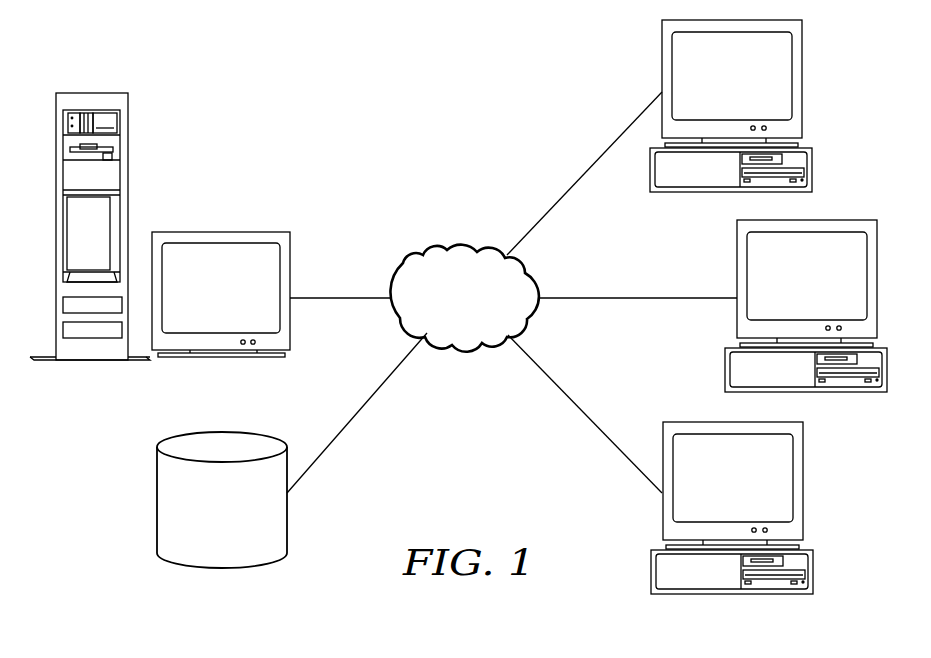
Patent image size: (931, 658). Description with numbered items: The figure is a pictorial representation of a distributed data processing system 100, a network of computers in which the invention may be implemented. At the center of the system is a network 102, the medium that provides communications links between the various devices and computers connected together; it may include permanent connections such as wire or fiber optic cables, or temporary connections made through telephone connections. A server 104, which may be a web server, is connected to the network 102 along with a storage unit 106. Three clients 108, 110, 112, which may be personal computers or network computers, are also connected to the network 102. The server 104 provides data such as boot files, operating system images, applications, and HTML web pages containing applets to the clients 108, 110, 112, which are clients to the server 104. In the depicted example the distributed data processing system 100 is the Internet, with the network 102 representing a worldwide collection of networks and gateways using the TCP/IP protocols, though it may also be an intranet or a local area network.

The distributed data processing system 100 is at (288, 89).
The network 102 is at (487, 308).
The server 104 is at (240, 298).
The storage unit 106 is at (240, 522).
The client 108 is at (750, 90).
The client 110 is at (827, 289).
The client 112 is at (752, 490).